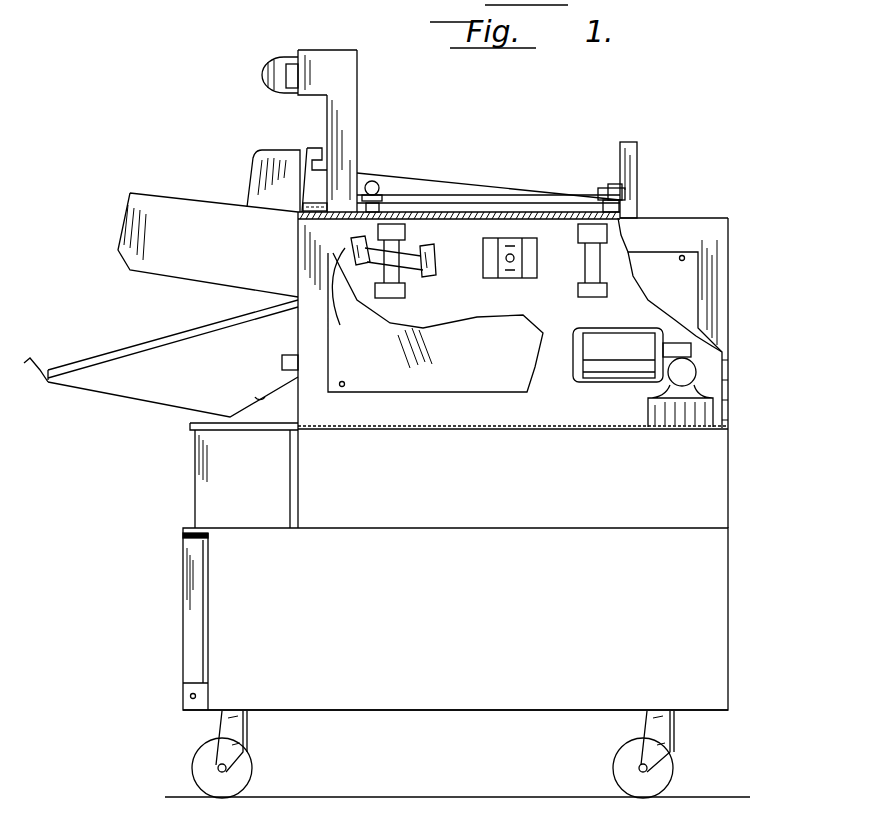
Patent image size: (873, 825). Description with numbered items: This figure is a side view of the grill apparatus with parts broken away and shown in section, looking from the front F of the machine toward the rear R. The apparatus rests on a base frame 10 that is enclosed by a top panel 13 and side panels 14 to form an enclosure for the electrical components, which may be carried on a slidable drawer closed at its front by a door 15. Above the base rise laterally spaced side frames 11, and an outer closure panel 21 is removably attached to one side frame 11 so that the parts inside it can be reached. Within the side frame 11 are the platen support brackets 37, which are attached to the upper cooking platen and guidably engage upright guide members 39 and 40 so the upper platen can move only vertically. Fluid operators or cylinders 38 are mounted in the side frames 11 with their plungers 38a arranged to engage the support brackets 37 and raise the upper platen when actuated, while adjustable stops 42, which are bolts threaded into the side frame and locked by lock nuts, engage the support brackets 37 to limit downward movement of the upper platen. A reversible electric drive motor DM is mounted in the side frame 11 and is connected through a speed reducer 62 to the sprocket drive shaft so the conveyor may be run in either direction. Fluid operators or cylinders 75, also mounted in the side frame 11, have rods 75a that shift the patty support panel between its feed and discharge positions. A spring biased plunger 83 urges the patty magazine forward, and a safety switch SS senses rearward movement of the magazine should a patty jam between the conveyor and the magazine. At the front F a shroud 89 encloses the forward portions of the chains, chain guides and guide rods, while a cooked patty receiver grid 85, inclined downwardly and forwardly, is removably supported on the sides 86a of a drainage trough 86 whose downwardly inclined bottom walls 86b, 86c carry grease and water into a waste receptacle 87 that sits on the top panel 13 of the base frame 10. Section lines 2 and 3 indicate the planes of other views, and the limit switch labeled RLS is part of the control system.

The section line 2- 2 is at (123, 37).
The section line 3- 3 is at (190, 228).
The base frame 10 is at (403, 702).
The side frames 11 is at (718, 306).
The top panel 13 is at (542, 528).
The side panels 14 is at (529, 683).
The door 15 is at (188, 630).
The outer closure panel 21 is at (497, 368).
The platen support brackets 37 is at (563, 166).
The fluid operators or cylinders 38 is at (400, 280).
The plungers 38a is at (407, 203).
The upright guide member 39 is at (355, 135).
The upright guide member 40 is at (637, 150).
The adjustable stops 42 is at (378, 195).
The speed reducer 62 is at (698, 372).
The fluid operators or cylinders 75 is at (410, 250).
The rods 75a is at (353, 299).
The spring biased plunger 83 is at (300, 220).
The grid 85 is at (180, 332).
The drainage trough 86 is at (124, 345).
The sides of drainage trough 86a is at (147, 385).
The downwardly inclined bottom wall 86b is at (105, 393).
The downwardly inclined bottom wall 86c is at (258, 396).
The waste receptacle 87 is at (195, 473).
The shroud 89 is at (148, 195).
The front F is at (254, 154).
The rear R is at (726, 216).
The safety switch SS is at (342, 235).
The limit switch RLS is at (509, 271).
The drive motor DM is at (612, 380).